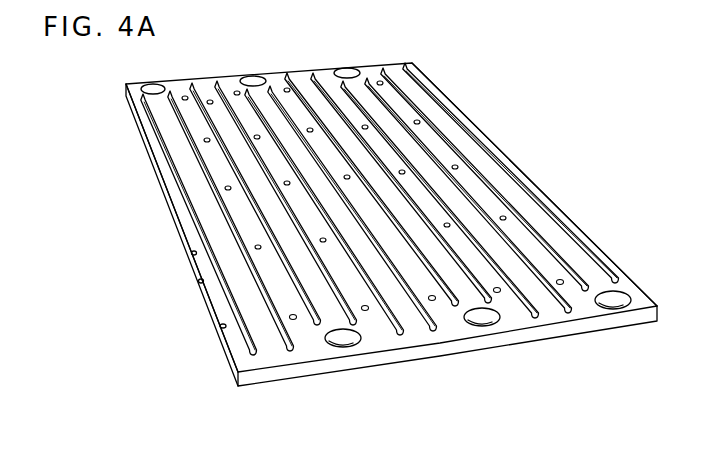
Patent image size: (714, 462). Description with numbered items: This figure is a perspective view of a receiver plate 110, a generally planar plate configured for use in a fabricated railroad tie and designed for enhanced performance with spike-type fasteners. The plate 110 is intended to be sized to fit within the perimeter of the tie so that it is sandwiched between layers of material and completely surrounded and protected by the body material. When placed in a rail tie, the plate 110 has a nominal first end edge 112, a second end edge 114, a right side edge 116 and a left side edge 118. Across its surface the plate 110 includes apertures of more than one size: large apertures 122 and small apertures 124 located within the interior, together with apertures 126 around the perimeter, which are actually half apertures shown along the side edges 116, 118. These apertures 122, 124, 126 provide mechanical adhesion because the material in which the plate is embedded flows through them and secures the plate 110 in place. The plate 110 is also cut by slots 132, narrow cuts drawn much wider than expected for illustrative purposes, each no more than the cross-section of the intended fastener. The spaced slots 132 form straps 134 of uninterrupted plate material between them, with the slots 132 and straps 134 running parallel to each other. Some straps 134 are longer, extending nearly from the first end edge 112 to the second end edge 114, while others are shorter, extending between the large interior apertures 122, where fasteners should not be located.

The receiver plate 110 is at (391, 227).
The first end edge 112 is at (325, 67).
The second end edge 114 is at (538, 333).
The right side edge 116 is at (587, 233).
The left side edge 118 is at (183, 233).
The large apertures 122 is at (327, 337).
The small apertures 124 is at (562, 285).
The half apertures 126 is at (223, 327).
The slots 132 is at (400, 332).
The straps 134 is at (417, 330).